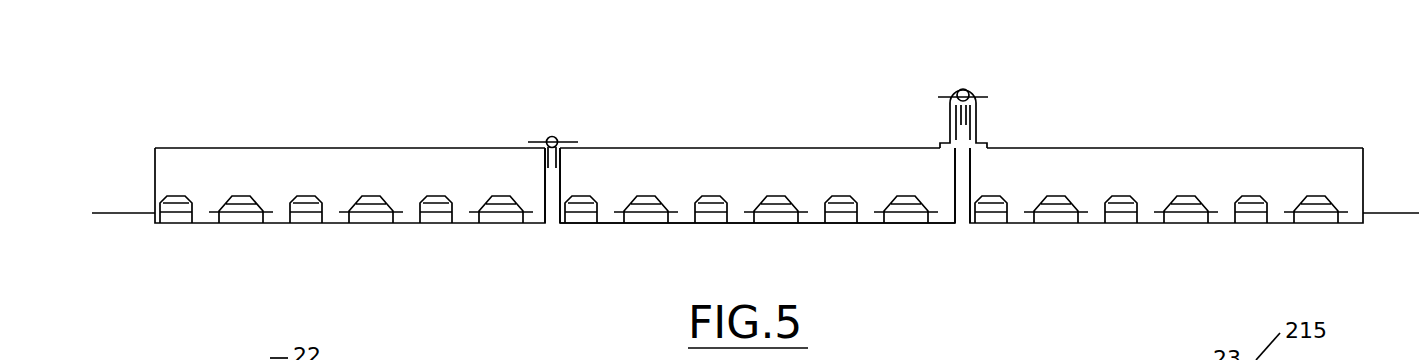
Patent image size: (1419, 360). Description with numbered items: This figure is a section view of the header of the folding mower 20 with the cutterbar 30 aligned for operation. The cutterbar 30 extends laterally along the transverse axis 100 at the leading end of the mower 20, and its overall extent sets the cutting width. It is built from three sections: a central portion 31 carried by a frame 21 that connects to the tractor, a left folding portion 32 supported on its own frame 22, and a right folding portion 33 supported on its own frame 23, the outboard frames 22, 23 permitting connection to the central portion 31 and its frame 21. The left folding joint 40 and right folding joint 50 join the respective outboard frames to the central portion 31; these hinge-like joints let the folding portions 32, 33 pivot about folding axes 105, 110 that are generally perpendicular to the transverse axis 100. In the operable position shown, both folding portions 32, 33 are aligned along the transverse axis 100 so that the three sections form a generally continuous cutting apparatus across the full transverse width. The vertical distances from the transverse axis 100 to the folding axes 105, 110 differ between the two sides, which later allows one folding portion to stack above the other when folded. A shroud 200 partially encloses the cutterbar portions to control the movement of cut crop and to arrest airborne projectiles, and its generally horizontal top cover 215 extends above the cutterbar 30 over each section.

The folding mower 20 is at (895, 272).
The frame 21 is at (778, 137).
The frame 22 is at (255, 117).
The frame 23 is at (1131, 130).
The cutterbar 30 is at (663, 246).
The central portion 31 is at (762, 227).
The left folding portion 32 is at (430, 227).
The right folding portion 33 is at (1043, 227).
The left folding joint 40 is at (546, 130).
The right folding joint 50 is at (943, 112).
The transverse axis 100 is at (103, 214).
The folding axis 105 is at (563, 122).
The folding axis 110 is at (963, 80).
The shroud 200 is at (213, 173).
The top cover 215 is at (403, 148).